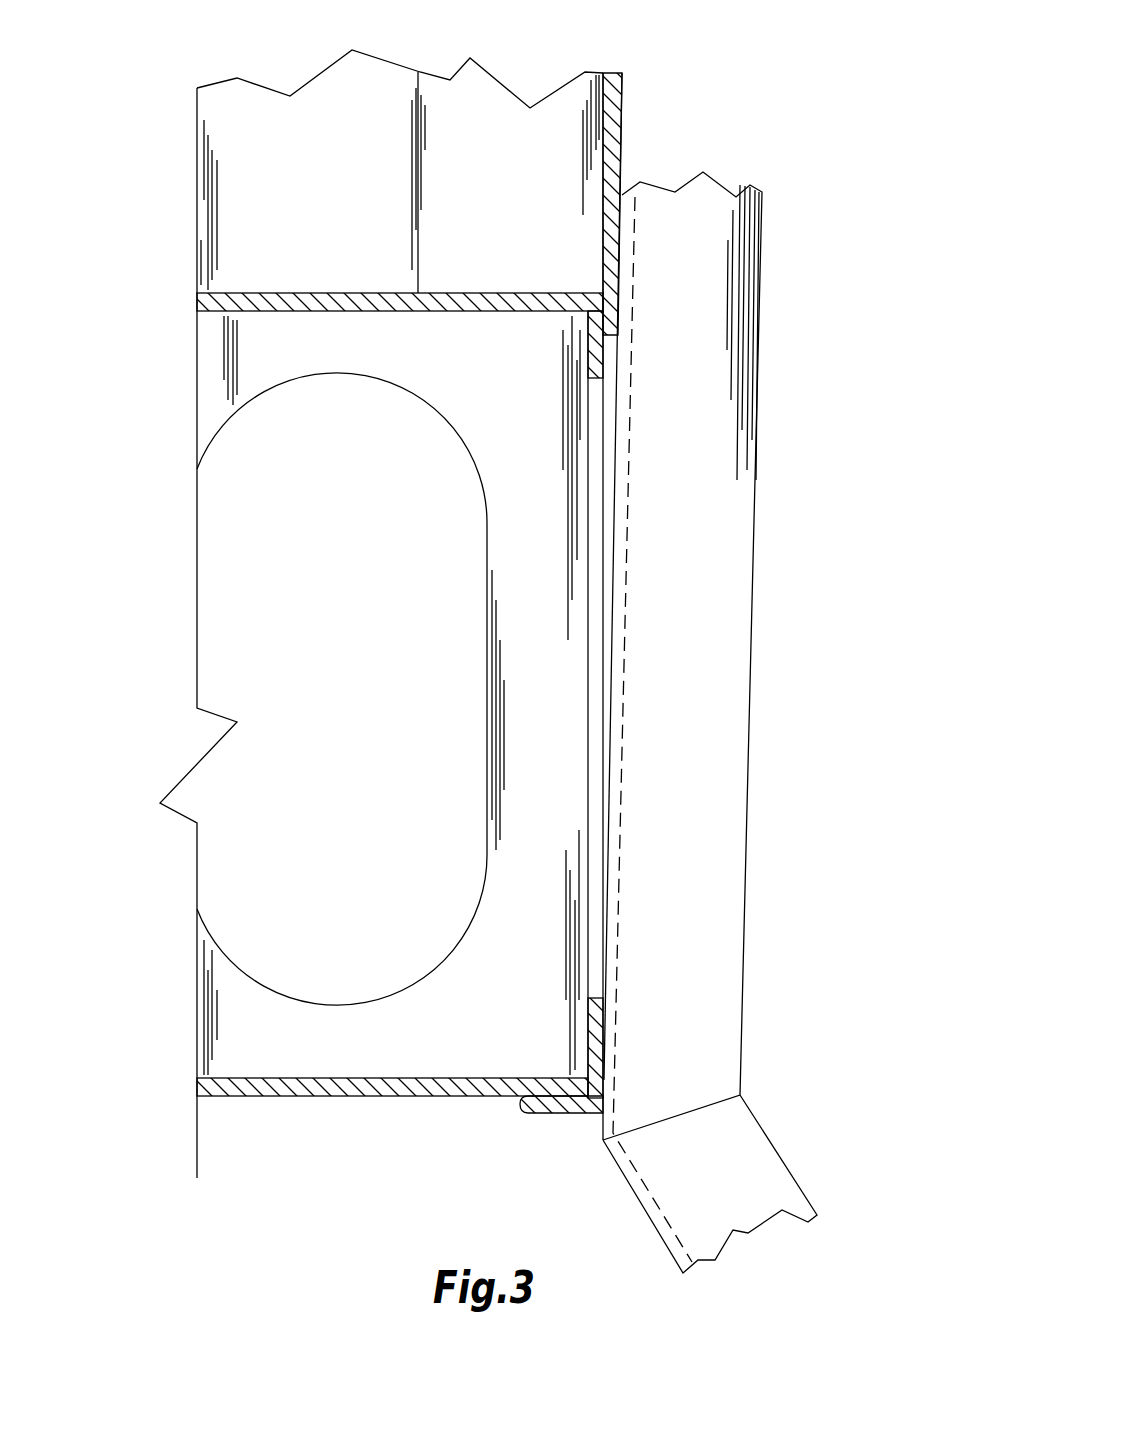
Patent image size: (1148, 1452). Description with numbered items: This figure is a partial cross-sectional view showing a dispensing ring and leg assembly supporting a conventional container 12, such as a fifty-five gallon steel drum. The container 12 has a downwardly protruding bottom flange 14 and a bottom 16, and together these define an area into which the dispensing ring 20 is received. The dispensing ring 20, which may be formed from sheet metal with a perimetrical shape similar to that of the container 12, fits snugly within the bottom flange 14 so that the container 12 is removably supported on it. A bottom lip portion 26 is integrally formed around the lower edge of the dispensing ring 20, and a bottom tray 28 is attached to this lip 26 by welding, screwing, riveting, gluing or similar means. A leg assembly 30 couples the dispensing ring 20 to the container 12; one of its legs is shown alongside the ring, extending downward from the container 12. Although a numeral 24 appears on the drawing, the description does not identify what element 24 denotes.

The container 12 is at (638, 80).
The downwardly protruding bottom flange 14 is at (617, 312).
The bottom 16 is at (447, 293).
The dispensing ring 20 is at (197, 968).
The flange / projection 24 is at (258, 985).
The bottom lip portion 26 is at (563, 1113).
The bottom tray 28 is at (403, 1080).
The leg assembly 30 is at (810, 540).